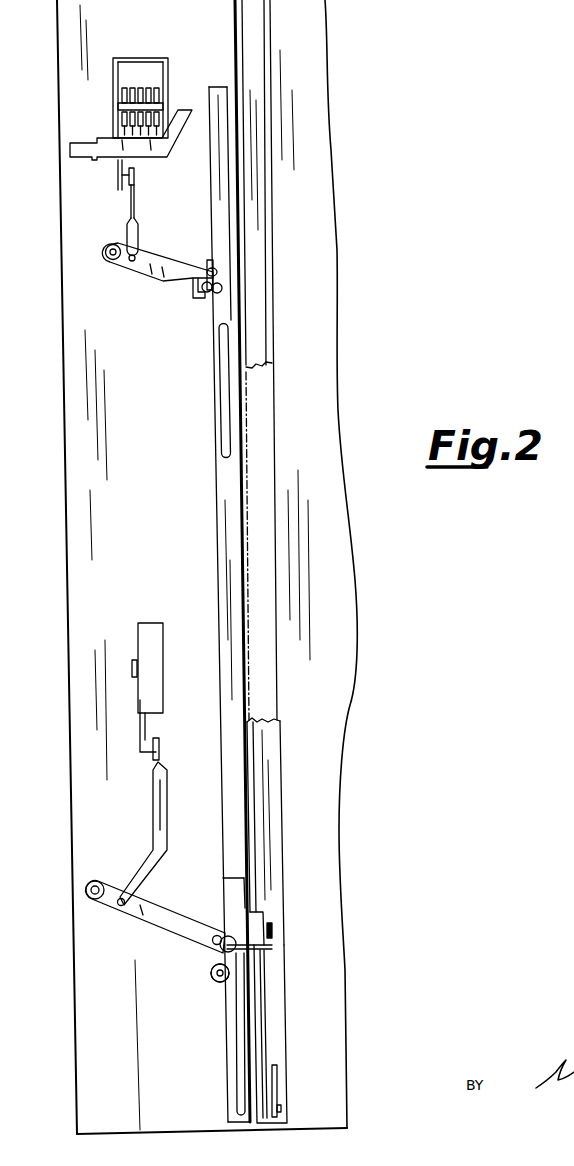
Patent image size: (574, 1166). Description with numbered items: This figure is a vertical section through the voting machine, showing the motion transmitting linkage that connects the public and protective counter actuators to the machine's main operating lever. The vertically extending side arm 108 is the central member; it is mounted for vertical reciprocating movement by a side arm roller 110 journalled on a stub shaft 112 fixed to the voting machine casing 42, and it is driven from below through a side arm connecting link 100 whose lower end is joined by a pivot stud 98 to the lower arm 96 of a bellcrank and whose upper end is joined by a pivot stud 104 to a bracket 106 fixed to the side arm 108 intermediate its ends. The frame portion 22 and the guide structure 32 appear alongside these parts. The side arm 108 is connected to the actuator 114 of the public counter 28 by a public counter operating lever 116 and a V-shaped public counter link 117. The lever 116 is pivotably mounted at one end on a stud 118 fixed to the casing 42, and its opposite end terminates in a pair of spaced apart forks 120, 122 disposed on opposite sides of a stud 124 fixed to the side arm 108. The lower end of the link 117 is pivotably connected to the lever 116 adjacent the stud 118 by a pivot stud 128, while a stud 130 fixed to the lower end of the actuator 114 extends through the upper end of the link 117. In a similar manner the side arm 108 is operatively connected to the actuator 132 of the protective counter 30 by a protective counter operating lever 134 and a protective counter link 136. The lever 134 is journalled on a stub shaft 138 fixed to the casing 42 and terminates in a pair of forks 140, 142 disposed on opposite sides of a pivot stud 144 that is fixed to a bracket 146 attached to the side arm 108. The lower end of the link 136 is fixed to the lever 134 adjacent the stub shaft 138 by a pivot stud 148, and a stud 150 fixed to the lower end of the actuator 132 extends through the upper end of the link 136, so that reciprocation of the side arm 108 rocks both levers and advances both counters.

The frame wall 22 is at (347, 248).
The public counter 28 is at (128, 643).
The protective counter 30 is at (147, 52).
The carriage guide assembly 32 is at (201, 614).
The voting machine casing 42 is at (76, 482).
The lower arm 96 is at (278, 1080).
The pivot stud 98 is at (282, 1109).
The side arm connecting link 100 is at (268, 1007).
The pivot stud 104 is at (268, 925).
The bracket 106 is at (232, 908).
The side arm 108 is at (224, 530).
The side arm roller 110 is at (208, 984).
The stub shaft 112 is at (211, 972).
The public counter actuator 114 is at (148, 715).
The public counter operating lever 116 is at (145, 912).
The public counter link 117 is at (156, 805).
The stud 118 is at (97, 880).
The fork 120 is at (219, 946).
The fork 122 is at (222, 935).
The stud 124 is at (237, 948).
The pivot stud 128 is at (120, 907).
The stud 130 is at (160, 741).
The protective counter actuator 132 is at (118, 166).
The protective counter operating lever 134 is at (150, 284).
The protective counter link 136 is at (127, 224).
The stub shaft 138 is at (107, 257).
The fork 140 is at (205, 298).
The fork 142 is at (207, 263).
The pivot stud 144 is at (222, 288).
The bracket 146 is at (209, 332).
The pivot stud 148 is at (131, 262).
The stud 150 is at (135, 178).